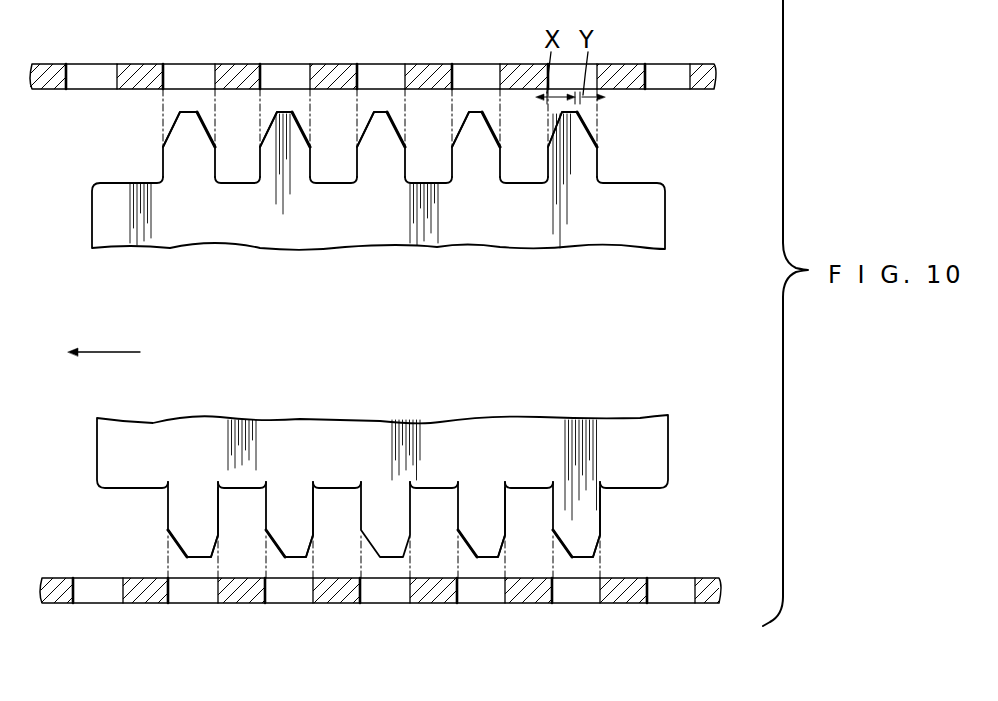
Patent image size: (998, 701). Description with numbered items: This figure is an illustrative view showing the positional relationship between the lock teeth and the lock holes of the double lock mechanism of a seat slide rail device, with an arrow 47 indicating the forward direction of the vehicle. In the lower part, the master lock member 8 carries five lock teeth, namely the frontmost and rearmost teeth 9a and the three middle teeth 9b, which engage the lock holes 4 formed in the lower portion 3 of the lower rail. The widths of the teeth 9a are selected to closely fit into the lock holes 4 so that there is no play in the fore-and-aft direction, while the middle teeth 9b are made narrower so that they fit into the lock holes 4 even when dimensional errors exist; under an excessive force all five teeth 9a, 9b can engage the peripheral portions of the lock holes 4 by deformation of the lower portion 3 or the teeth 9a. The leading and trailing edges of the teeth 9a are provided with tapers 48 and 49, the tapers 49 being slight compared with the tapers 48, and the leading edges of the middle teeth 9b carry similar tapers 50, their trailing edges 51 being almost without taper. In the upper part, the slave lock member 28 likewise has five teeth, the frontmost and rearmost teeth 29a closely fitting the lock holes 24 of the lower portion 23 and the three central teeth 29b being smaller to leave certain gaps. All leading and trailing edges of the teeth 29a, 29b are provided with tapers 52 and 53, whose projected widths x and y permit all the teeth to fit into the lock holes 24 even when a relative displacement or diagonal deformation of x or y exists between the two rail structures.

The lock holes 24 is at (72, 75).
The lower portion 23 is at (58, 84).
The slave lock member 28 is at (100, 230).
The frontmost and rearmost teeth 29a is at (178, 156).
The central teeth 29b is at (283, 153).
The tapers 52 is at (174, 126).
The tapers 53 is at (203, 118).
The arrow 47 is at (124, 352).
The master lock member 8 is at (105, 458).
The frontmost and rearmost teeth 9a is at (178, 514).
The middle teeth 9b is at (372, 520).
The tapers 48 is at (178, 538).
The tapers 49 is at (216, 542).
The tapers 50 is at (272, 542).
The steep flank of intermediate tooth 51 is at (311, 538).
The lower portion 3 is at (53, 583).
The lock holes 4 is at (75, 590).